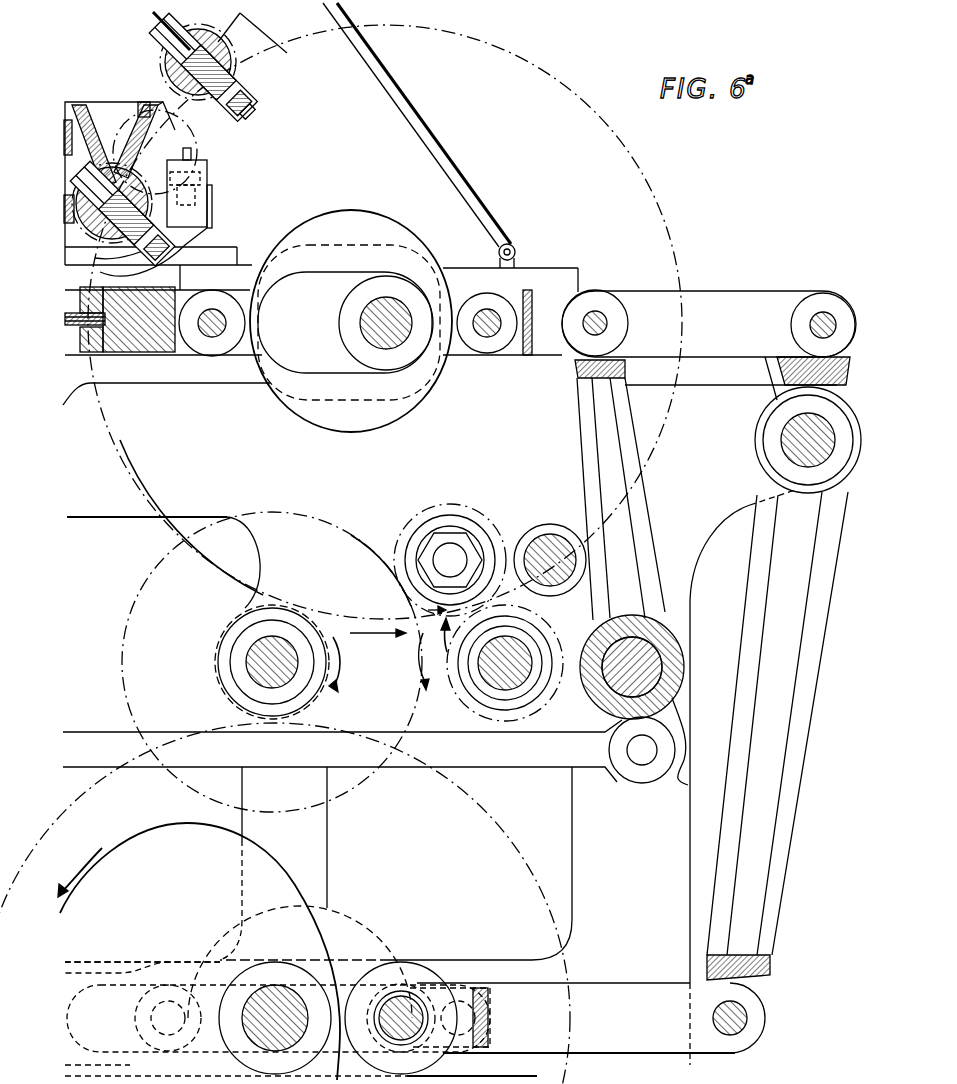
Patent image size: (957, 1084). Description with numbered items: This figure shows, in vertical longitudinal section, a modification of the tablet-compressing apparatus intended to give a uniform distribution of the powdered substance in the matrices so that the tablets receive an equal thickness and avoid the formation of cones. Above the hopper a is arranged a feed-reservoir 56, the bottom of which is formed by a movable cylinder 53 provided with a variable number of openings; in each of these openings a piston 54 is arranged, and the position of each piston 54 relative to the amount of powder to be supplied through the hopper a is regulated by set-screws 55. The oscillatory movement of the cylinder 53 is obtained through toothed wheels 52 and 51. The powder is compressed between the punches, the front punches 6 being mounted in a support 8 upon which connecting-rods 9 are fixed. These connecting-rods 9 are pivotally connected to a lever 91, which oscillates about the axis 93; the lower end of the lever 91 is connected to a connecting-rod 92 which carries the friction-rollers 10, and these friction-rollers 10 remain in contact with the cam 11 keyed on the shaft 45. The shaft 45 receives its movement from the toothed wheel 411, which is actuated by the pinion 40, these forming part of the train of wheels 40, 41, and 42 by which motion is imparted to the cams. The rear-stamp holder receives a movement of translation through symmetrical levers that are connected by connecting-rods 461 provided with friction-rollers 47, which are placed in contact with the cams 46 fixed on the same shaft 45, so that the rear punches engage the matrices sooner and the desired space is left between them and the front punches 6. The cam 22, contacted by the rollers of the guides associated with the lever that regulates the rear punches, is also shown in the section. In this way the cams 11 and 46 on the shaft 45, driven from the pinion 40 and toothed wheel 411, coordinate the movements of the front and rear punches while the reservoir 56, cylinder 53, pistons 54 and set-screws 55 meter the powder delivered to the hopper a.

The front punches 6 is at (72, 328).
The support 8 is at (148, 335).
The connecting-rods 9 is at (709, 337).
The lever 91 is at (777, 763).
The connecting-rod 92 is at (622, 957).
The axis 93 is at (795, 440).
The friction-rollers 10 is at (417, 1018).
The cam 11 is at (200, 951).
The cam 22 is at (322, 418).
The pinion 40 is at (217, 655).
The wheel 41 is at (405, 712).
The toothed wheel 411 is at (500, 827).
The wheel 42 is at (457, 1068).
The shaft 45 is at (285, 997).
The cams 46 is at (377, 947).
The connecting-rods 461 is at (67, 973).
The friction-rollers 47 is at (150, 1017).
The toothed wheel 51 is at (167, 100).
The toothed wheel 52 is at (165, 53).
The movable cylinder 53 is at (173, 75).
The piston 54 is at (177, 47).
The set-screws 55 is at (236, 105).
The feed-reservoir 56 is at (283, 44).
The hopper a is at (100, 108).